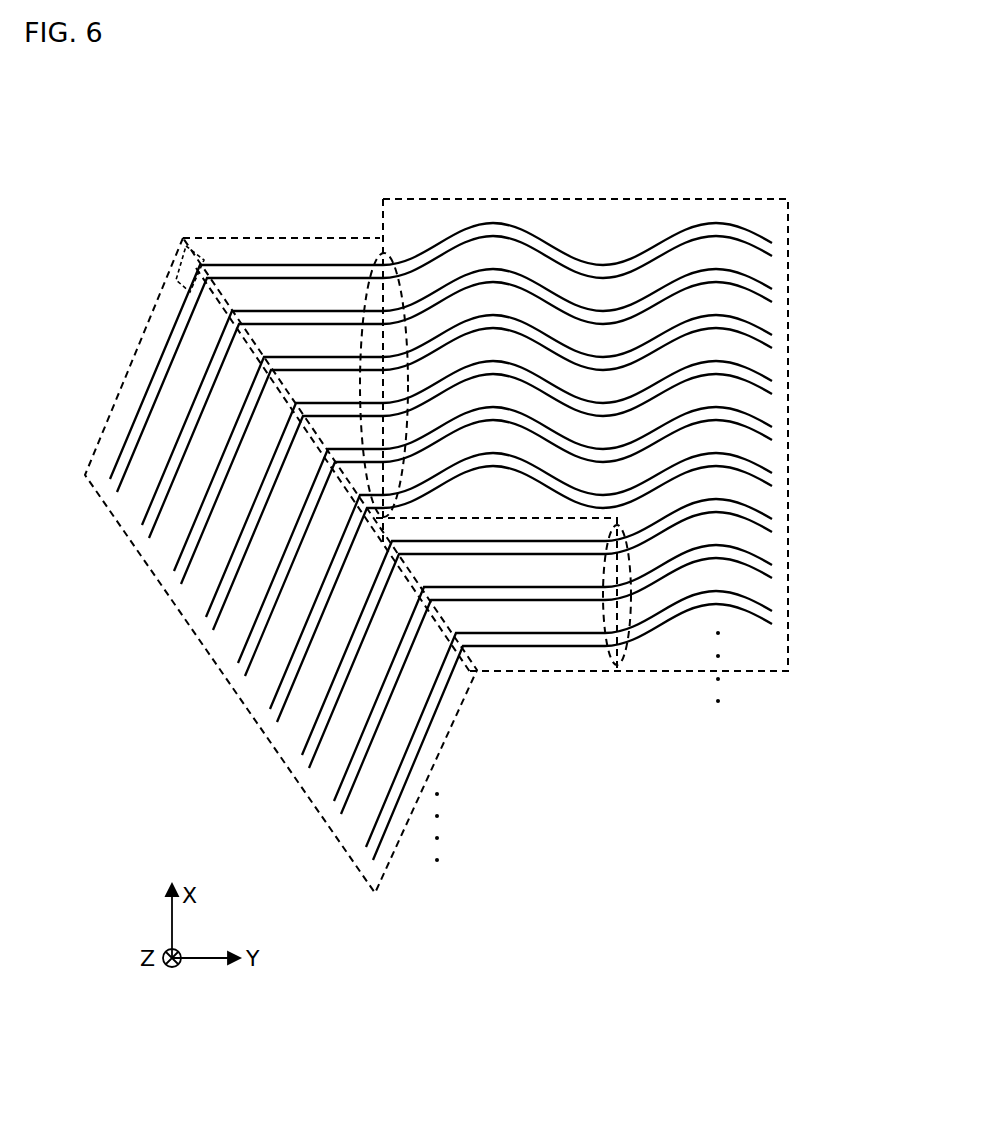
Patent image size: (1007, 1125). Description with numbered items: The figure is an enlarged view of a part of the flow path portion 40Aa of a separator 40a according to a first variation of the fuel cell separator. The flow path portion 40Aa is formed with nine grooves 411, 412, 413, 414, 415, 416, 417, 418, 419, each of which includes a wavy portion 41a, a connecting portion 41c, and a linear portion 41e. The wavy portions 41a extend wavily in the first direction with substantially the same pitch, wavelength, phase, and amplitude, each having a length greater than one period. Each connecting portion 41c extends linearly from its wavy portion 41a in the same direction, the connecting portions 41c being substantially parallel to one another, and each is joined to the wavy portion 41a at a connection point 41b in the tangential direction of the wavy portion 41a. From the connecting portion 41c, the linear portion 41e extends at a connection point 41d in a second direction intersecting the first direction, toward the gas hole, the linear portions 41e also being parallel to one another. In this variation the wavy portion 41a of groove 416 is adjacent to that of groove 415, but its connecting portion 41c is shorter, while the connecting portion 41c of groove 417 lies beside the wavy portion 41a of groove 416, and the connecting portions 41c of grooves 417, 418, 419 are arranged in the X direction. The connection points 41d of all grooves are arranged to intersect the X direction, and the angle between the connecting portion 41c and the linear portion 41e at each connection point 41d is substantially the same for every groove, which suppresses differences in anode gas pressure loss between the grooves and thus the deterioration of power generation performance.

The separator 40a is at (792, 138).
The flow path portion 40Aa is at (814, 195).
The wavy portion 41a is at (475, 197).
The connection point 41b is at (378, 250).
The connecting portion 41c is at (280, 237).
The connection point 41d is at (190, 290).
The linear portion 41e is at (132, 356).
The groove 411 is at (764, 226).
The groove 412 is at (764, 269).
The groove 413 is at (764, 316).
The groove 414 is at (764, 363).
The groove 415 is at (764, 409).
The groove 416 is at (764, 456).
The groove 417 is at (764, 503).
The groove 418 is at (764, 546).
The groove 419 is at (764, 590).